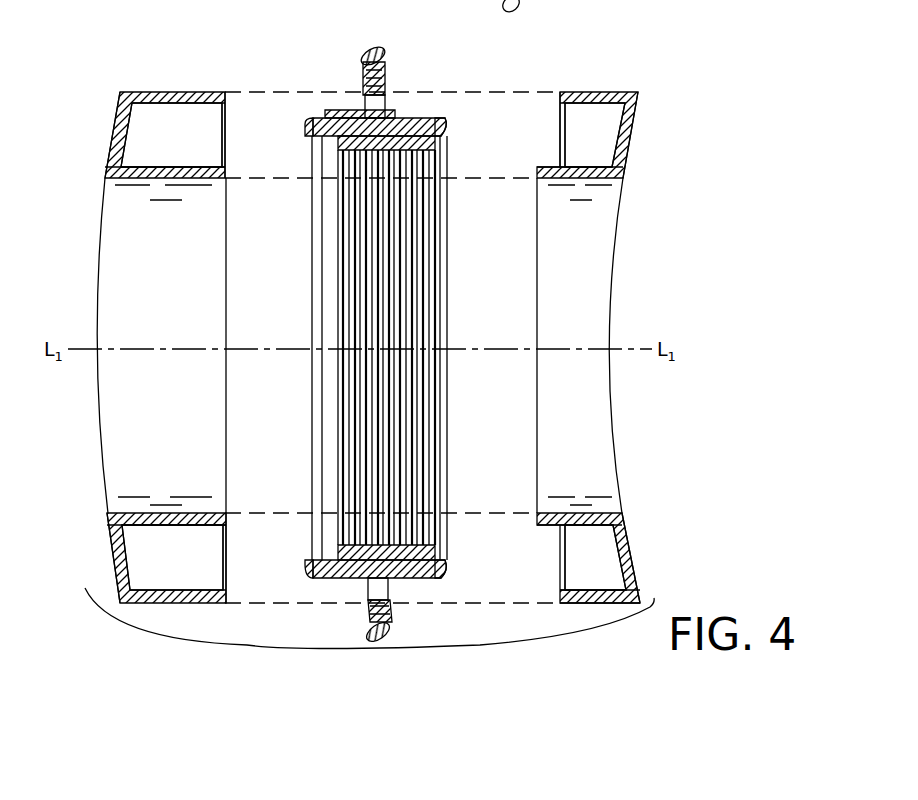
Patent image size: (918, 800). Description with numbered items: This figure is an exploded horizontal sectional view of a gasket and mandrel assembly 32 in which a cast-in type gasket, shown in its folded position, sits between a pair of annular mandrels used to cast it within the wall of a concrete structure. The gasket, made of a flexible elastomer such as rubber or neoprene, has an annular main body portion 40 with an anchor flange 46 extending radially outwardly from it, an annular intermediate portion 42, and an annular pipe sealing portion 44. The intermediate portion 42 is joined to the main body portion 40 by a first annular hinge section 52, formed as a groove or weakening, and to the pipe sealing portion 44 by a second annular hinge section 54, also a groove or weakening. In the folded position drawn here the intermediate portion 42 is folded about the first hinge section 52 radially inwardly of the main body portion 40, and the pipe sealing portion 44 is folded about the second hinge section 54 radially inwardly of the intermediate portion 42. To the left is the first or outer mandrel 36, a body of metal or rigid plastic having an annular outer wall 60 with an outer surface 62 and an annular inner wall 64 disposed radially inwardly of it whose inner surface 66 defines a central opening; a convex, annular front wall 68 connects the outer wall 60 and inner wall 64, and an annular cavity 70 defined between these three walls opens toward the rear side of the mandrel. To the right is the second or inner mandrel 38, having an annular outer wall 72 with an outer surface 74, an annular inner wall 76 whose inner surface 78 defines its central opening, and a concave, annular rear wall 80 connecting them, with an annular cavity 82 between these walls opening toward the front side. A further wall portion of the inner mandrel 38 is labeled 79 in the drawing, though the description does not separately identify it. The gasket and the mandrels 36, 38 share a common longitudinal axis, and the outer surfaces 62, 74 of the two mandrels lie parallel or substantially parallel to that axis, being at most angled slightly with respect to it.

The gasket and mandrel assembly 32 is at (117, 71).
The outer mandrel 36 is at (167, 84).
The inner mandrel 38 is at (657, 87).
The main body portion 40 is at (376, 113).
The intermediate portion 42 is at (402, 130).
The pipe sealing portion 44 is at (405, 148).
The anchor flange 46 is at (365, 95).
The first annular hinge section 52 is at (312, 122).
The second annular hinge section 54 is at (447, 126).
The outer wall 60 is at (146, 94).
The outer surface 62 is at (200, 92).
The inner wall 64 is at (141, 172).
The inner surface 66 is at (191, 513).
The front wall 68 is at (112, 130).
The annular cavity 70 is at (203, 133).
The outer wall 72 is at (588, 100).
The outer surface 74 is at (598, 600).
The inner wall 76 is at (569, 172).
The inner surface 78 is at (593, 513).
The inner flange wall 79 is at (617, 100).
The rear wall 80 is at (630, 135).
The annular cavity 82 is at (575, 133).